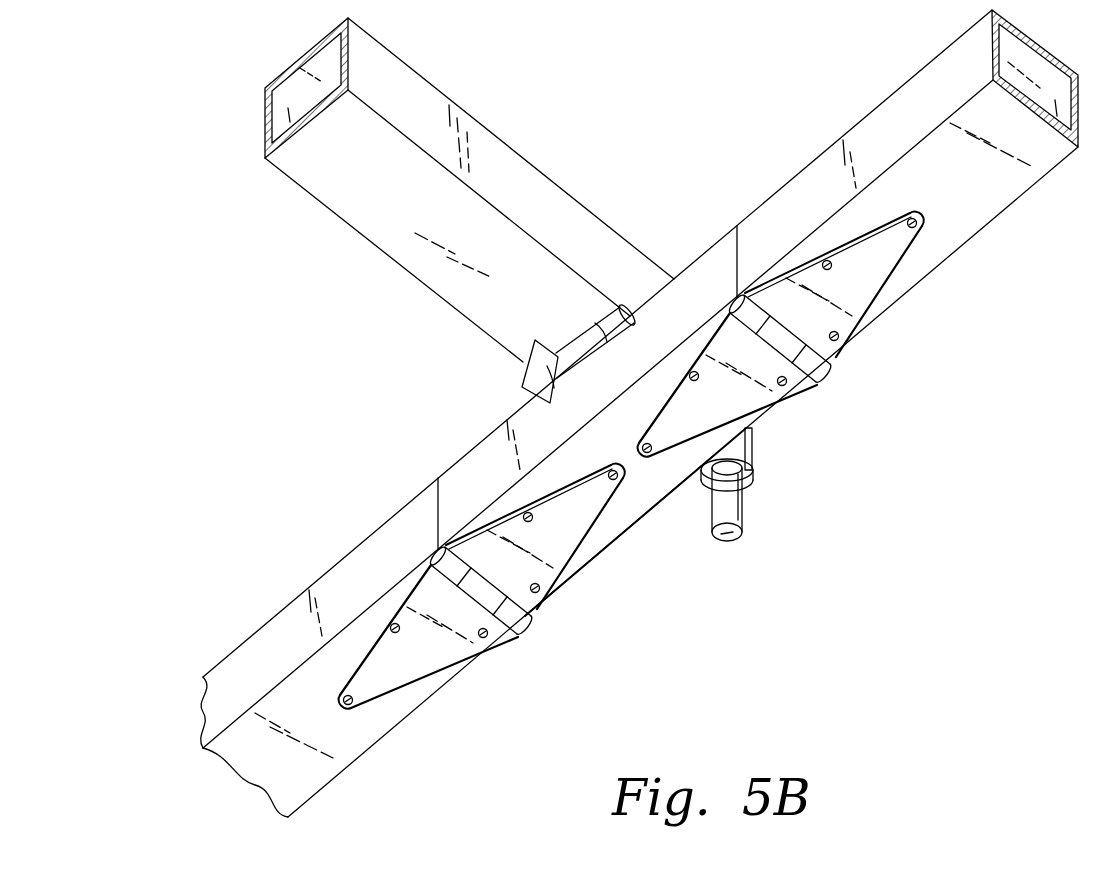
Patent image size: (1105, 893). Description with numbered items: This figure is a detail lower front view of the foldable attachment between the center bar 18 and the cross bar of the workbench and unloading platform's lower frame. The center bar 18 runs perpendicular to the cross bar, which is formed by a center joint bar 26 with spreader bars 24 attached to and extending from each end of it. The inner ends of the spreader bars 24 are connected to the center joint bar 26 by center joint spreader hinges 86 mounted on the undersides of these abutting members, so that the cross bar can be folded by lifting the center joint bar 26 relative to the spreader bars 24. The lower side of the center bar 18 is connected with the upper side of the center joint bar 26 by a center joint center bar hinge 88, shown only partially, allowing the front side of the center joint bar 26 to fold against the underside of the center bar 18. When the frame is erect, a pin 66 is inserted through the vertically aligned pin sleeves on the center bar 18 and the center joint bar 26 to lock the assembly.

The center bar 18 is at (555, 200).
The spreader bar 24 is at (905, 88).
The center joint bar 26 is at (622, 518).
The pin 66 is at (743, 510).
The center joint spreader hinge 86 is at (838, 382).
The center joint center bar hinge 88 is at (523, 356).